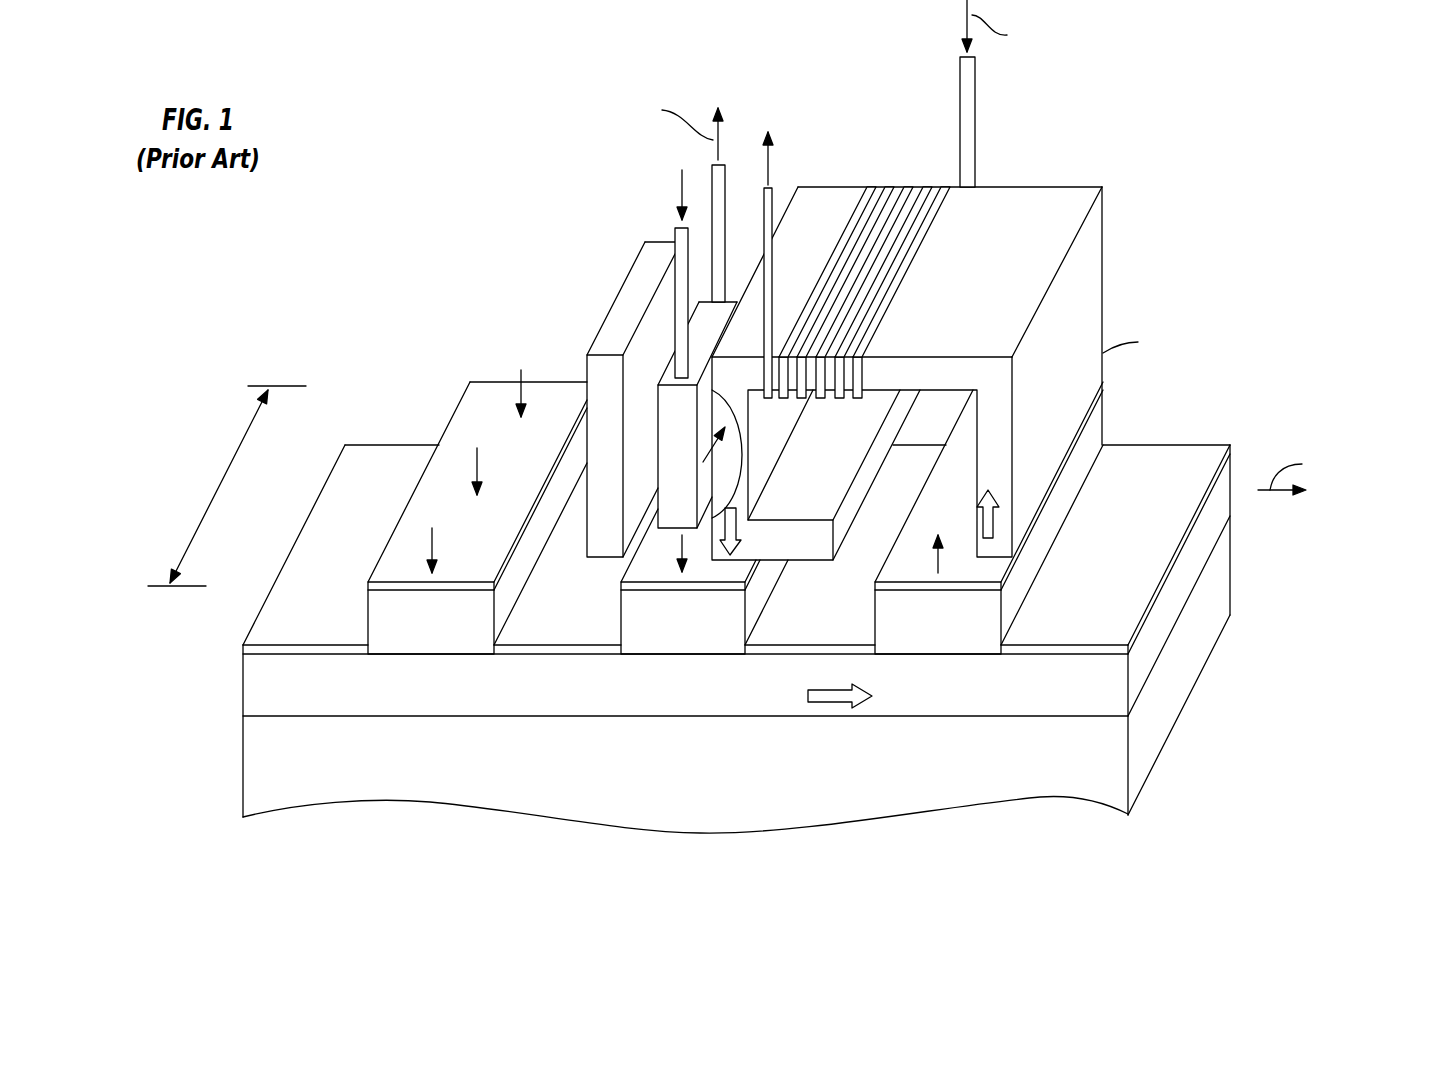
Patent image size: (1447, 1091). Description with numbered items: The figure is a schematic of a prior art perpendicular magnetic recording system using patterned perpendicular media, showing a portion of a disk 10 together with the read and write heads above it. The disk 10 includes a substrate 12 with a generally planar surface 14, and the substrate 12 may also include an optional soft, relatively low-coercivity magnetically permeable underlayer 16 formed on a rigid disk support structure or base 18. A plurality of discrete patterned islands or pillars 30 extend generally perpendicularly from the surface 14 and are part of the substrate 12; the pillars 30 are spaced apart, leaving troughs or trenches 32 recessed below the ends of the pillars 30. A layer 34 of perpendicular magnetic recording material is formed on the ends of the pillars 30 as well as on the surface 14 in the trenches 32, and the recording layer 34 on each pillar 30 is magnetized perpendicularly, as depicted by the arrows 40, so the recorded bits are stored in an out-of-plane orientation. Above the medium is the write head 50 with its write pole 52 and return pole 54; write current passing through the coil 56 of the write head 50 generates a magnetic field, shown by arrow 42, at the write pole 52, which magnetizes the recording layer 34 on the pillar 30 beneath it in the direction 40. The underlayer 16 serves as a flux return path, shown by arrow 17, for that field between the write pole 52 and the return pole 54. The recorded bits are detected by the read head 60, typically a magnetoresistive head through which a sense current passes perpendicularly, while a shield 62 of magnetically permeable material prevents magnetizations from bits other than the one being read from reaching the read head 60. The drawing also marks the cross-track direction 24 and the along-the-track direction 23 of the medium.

The disk 10 is at (1181, 779).
The substrate 12 is at (223, 582).
The surface 14 is at (433, 657).
The soft underlayer 16 is at (1099, 676).
The flux return path arrow 17 is at (823, 708).
The base 18 is at (1037, 797).
The along-the-track direction 23 is at (1270, 490).
The cross-track direction 24 is at (248, 430).
The pillars 30 is at (378, 620).
The trenches 32 is at (372, 462).
The recording layer 34 is at (375, 590).
The arrows 40 is at (517, 386).
The magnetic field arrow 42 is at (994, 530).
The write head 50 is at (1065, 197).
The write pole 52 is at (1085, 298).
The return pole 54 is at (875, 410).
The coil 56 is at (868, 197).
The read head 60 is at (668, 395).
The shield 62 is at (595, 375).